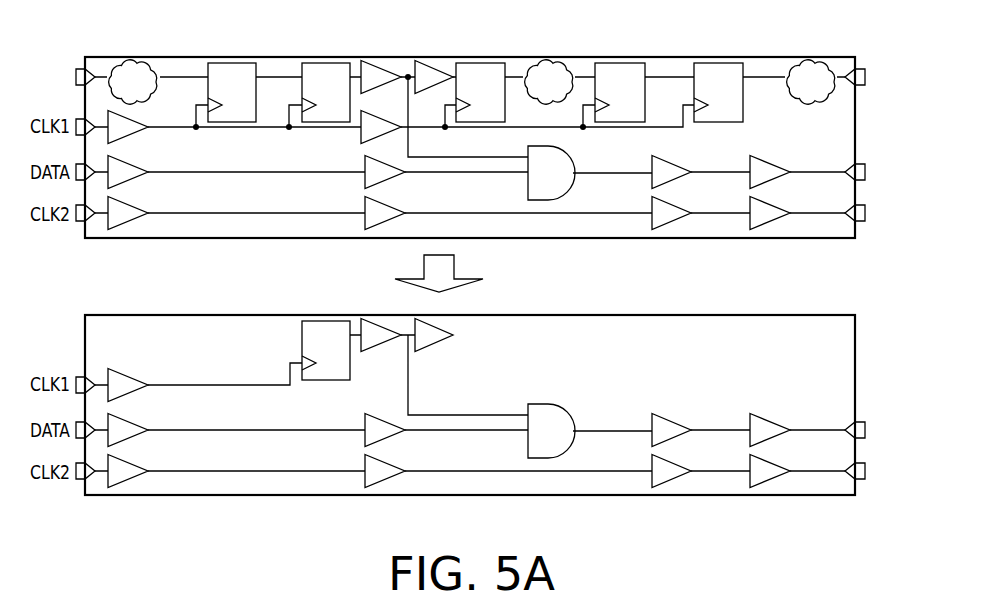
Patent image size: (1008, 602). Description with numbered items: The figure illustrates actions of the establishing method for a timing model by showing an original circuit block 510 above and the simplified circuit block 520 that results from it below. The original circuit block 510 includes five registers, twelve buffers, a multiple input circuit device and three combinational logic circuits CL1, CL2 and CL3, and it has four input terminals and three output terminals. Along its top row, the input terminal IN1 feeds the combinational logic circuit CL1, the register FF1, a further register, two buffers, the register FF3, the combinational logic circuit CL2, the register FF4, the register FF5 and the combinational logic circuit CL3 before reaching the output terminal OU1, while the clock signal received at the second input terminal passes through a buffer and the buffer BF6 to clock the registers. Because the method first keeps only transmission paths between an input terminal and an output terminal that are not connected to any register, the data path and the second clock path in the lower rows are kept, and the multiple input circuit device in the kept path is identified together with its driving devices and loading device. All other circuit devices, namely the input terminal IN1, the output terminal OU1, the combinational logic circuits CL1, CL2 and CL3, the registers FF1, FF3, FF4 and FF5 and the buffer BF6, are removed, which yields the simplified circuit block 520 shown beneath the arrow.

The circuit block 510 is at (855, 123).
The simplified circuit block 520 is at (855, 382).
The input terminal IN1 is at (80, 67).
The output terminal OU1 is at (866, 77).
The combinational logic circuit CL1 is at (137, 70).
The combinational logic circuit CL2 is at (553, 68).
The combinational logic circuit CL3 is at (813, 68).
The register FF1 is at (235, 70).
The register FF3 is at (490, 68).
The register FF4 is at (627, 68).
The register FF5 is at (718, 68).
The buffer BF6 is at (383, 119).